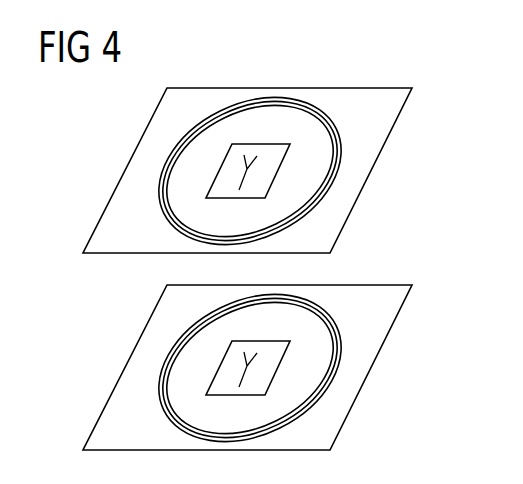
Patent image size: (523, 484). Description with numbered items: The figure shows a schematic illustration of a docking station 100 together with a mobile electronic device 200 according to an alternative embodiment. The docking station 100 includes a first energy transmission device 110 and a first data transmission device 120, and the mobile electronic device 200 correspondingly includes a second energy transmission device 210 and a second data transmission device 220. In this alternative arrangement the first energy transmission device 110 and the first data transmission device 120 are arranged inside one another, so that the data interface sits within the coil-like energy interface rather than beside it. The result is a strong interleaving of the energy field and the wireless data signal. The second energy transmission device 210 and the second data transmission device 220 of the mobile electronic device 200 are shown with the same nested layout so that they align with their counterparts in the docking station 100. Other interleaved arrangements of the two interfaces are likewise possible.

The mobile electronic device 200 is at (392, 107).
The second energy transmission device 210 is at (328, 170).
The second data transmission device 220 is at (268, 189).
The docking station 100 is at (393, 303).
The first energy transmission device 110 is at (328, 367).
The first data transmission device 120 is at (268, 386).